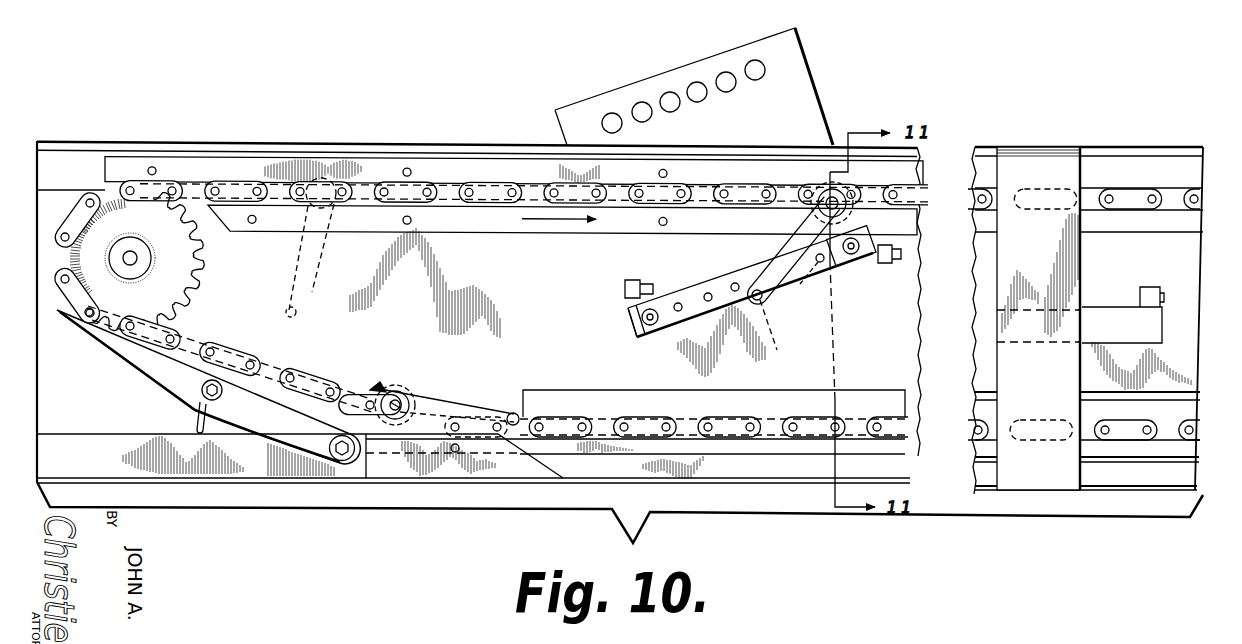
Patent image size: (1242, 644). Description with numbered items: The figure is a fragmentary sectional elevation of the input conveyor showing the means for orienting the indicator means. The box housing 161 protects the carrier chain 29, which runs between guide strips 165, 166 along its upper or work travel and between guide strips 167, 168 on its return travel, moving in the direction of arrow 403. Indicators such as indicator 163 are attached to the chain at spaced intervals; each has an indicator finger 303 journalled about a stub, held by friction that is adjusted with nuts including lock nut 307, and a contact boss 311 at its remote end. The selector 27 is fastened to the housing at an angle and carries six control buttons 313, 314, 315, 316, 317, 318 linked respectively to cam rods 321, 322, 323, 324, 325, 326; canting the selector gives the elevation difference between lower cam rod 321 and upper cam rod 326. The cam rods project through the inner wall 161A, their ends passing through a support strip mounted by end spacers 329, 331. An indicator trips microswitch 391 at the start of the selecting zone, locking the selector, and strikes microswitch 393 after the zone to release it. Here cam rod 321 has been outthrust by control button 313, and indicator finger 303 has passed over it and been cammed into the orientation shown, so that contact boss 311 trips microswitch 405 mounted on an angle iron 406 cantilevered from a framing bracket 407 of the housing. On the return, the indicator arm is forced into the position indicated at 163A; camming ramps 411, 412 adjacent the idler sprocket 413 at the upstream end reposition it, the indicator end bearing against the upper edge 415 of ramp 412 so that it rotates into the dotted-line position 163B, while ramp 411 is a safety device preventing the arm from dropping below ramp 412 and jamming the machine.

The box housing 161 is at (274, 138).
The guide strip 165 is at (380, 170).
The carrier chain 29 is at (485, 188).
The idler sprocket 413 is at (200, 247).
The upper edge of the ramp 415 is at (110, 306).
The indicator (dotted-line position) 163B is at (310, 318).
The guide strip 166 is at (478, 222).
The arrow 403 is at (570, 217).
The cam rod 325 is at (663, 292).
The microswitch 391 is at (624, 283).
The cam rod 322 is at (708, 293).
The cam rod 323 is at (735, 283).
The contact boss 311 is at (513, 411).
The lower cam rod 321 is at (678, 311).
The end spacer 331 is at (637, 338).
The indicator (returning position) 163A is at (420, 398).
The camming ramp 412 is at (270, 430).
The camming ramp 411 is at (485, 472).
The guide strip 168 is at (633, 448).
The guide strip 167 is at (705, 398).
The cam rod 324 is at (780, 352).
The indicator 163 is at (812, 290).
The indicator finger 303 is at (836, 275).
The upper cam rod 326 is at (820, 262).
The end spacer 329 is at (853, 253).
The microswitch 393 is at (902, 255).
The lock nut 307 is at (836, 165).
The selector 27 is at (798, 68).
The control button 313 is at (605, 116).
The control button 314 is at (633, 106).
The control button 315 is at (662, 95).
The control button 316 is at (691, 85).
The control button 317 is at (723, 90).
The control button 318 is at (760, 78).
The inner wall 161A is at (912, 350).
The framing bracket 407 is at (1072, 250).
The microswitch 405 is at (1140, 297).
The angle iron 406 is at (1150, 330).